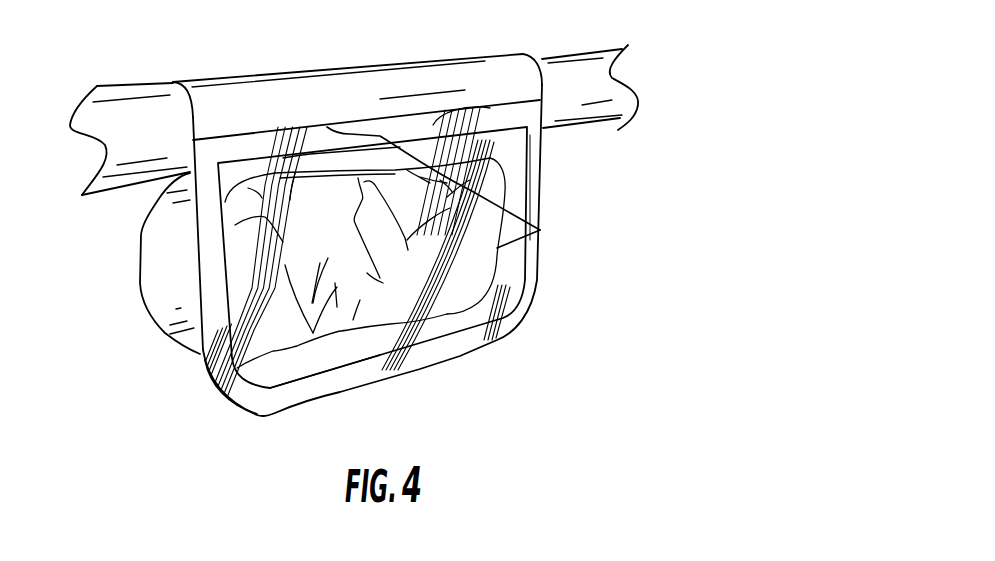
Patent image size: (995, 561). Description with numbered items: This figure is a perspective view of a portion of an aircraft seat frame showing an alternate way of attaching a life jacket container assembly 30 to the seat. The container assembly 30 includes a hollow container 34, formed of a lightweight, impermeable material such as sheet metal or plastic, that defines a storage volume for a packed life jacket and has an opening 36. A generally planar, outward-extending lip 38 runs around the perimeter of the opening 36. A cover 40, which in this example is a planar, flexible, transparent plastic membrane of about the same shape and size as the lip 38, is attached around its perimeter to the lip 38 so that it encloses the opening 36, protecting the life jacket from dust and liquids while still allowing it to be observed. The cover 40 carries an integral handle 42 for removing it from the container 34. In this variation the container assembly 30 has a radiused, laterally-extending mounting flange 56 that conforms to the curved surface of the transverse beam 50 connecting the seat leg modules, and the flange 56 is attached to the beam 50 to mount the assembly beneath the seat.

The life jacket container assembly 30 is at (176, 382).
The container 34 is at (182, 270).
The opening 36 is at (250, 375).
The lip 38 is at (538, 175).
The cover 40 is at (307, 370).
The handle 42 is at (517, 246).
The transverse beam 50 is at (583, 65).
The mounting flange 56 is at (250, 93).